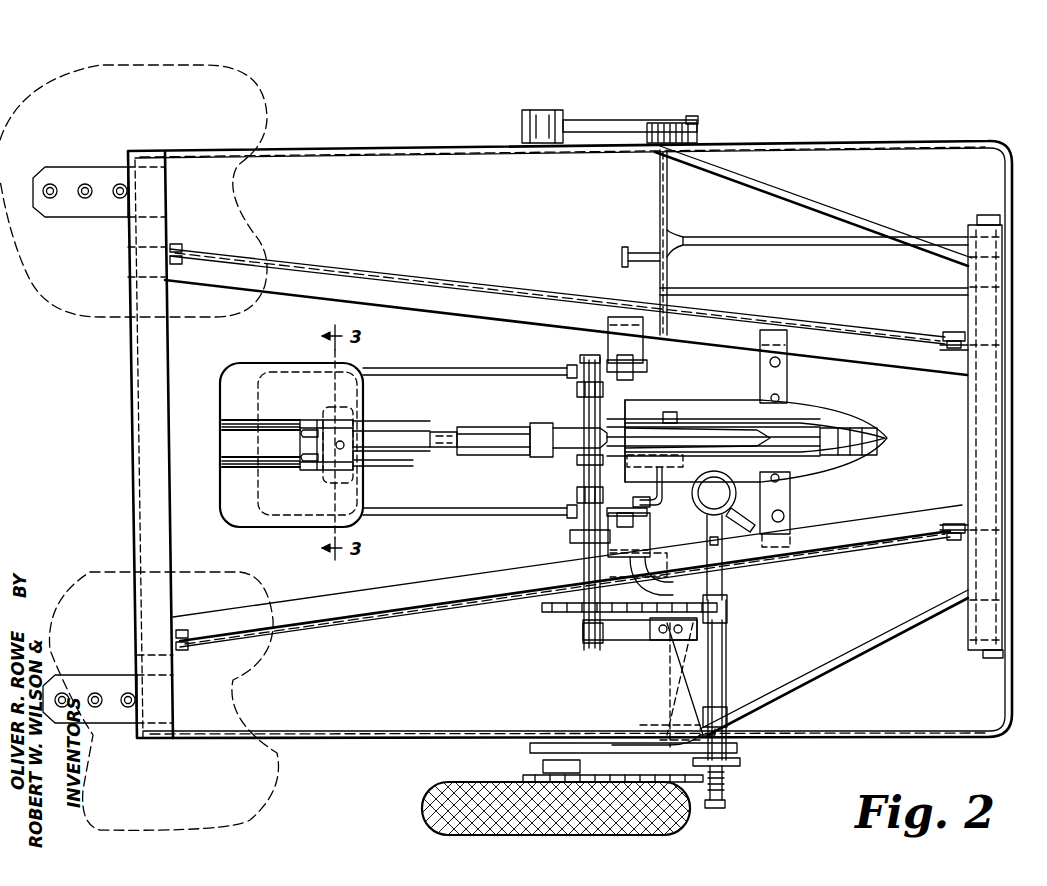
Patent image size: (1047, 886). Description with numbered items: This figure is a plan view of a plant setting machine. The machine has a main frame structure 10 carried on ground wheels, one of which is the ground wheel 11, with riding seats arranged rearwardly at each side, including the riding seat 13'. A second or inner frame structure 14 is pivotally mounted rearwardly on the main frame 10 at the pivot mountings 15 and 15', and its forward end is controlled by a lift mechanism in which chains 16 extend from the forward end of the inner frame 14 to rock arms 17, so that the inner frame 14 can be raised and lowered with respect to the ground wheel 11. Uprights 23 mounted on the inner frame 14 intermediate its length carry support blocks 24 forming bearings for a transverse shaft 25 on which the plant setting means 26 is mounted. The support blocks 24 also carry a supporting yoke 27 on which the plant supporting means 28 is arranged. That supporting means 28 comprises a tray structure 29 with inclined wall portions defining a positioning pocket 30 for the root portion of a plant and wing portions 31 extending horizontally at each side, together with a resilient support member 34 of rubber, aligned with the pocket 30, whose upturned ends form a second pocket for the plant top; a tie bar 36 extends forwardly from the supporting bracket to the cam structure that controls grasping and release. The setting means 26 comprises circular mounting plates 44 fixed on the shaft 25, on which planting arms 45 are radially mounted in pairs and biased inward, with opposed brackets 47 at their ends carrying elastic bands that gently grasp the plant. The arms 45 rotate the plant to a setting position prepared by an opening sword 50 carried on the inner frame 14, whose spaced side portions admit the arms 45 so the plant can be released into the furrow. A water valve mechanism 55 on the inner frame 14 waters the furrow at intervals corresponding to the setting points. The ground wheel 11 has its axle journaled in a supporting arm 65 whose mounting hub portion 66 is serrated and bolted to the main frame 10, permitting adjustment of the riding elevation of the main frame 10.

The main frame structure 10 is at (370, 150).
The ground wheel 11 is at (422, 808).
The riding seat 13' is at (139, 447).
The second or inner frame structure 14 is at (410, 310).
The pivot mounting 15 is at (195, 653).
The pivot mounting 15' is at (191, 235).
The chains 16 is at (943, 340).
The rock arms 17 is at (936, 353).
The uprights 23 is at (636, 344).
The support blocks 24 is at (648, 372).
The transverse shaft 25 is at (583, 650).
The plant setting means 26 is at (570, 416).
The supporting yoke 27 is at (421, 518).
The plant supporting means 28 is at (228, 362).
The tray structure 29 is at (494, 466).
The positioning pocket 30 is at (226, 450).
The wing portions 31 is at (286, 368).
The resilient support member 34 is at (360, 430).
The tie bar 36 is at (418, 453).
The circular mounting plates 44 is at (580, 462).
The planting arms 45 is at (437, 423).
The brackets 47 is at (308, 428).
The opening sword 50 is at (831, 405).
The water valve mechanism 55 is at (787, 496).
The supporting arm 65 is at (598, 120).
The mounting hub portion 66 is at (692, 124).